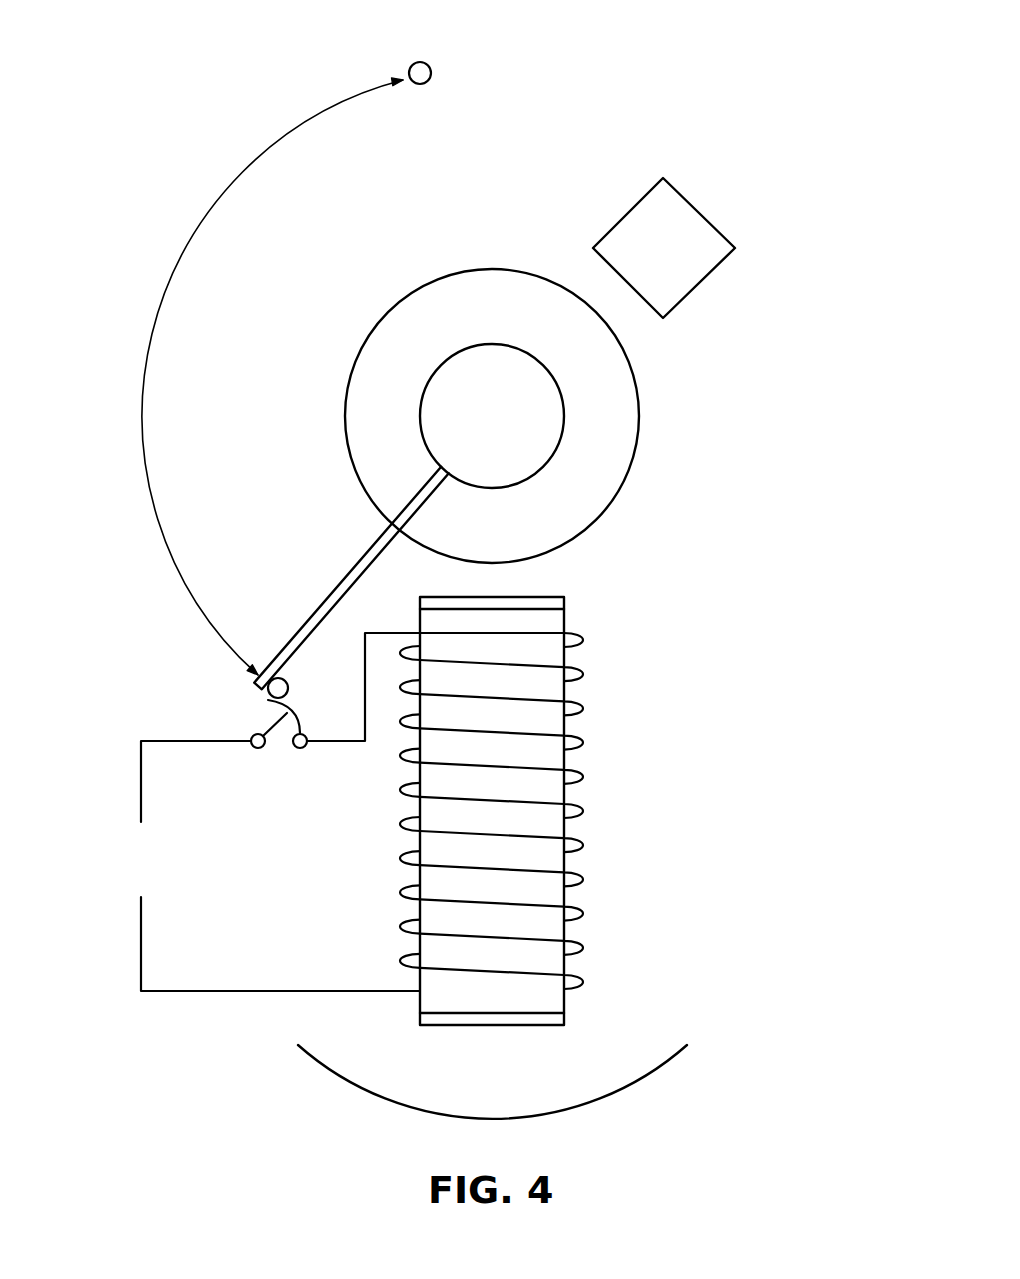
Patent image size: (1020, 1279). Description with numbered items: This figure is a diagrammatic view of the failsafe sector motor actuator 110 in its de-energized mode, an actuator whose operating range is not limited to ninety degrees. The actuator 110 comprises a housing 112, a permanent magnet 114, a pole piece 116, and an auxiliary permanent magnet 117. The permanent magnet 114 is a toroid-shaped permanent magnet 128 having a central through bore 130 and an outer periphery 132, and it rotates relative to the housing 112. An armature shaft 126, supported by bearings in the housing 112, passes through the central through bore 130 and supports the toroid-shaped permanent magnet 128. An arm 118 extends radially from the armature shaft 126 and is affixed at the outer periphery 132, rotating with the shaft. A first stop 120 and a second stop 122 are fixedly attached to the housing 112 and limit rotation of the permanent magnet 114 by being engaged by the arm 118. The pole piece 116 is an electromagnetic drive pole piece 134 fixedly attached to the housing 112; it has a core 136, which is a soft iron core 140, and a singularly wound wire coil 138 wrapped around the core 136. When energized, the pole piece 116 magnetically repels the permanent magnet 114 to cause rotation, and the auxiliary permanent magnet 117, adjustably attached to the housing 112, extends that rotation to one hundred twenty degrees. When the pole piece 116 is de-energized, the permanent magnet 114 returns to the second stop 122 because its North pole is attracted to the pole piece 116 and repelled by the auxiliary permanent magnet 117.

The failsafe sector motor actuator 110 is at (745, 431).
The housing 112 is at (350, 1088).
The permanent magnet 114 is at (605, 513).
The toroid-shaped permanent magnet 128 is at (547, 416).
The pole piece 116 is at (567, 604).
The electromagnetic drive pole piece 134 is at (571, 599).
The auxiliary permanent magnet 117 is at (616, 217).
The arm 118 is at (387, 528).
The first stop 120 is at (429, 60).
The second stop 122 is at (292, 685).
The armature shaft 126 is at (465, 380).
The central through bore 130 is at (427, 381).
The outer periphery 132 is at (547, 389).
The core 136 is at (540, 1003).
The soft iron core 140 is at (562, 1006).
The singularly wound wire coil 138 is at (589, 713).